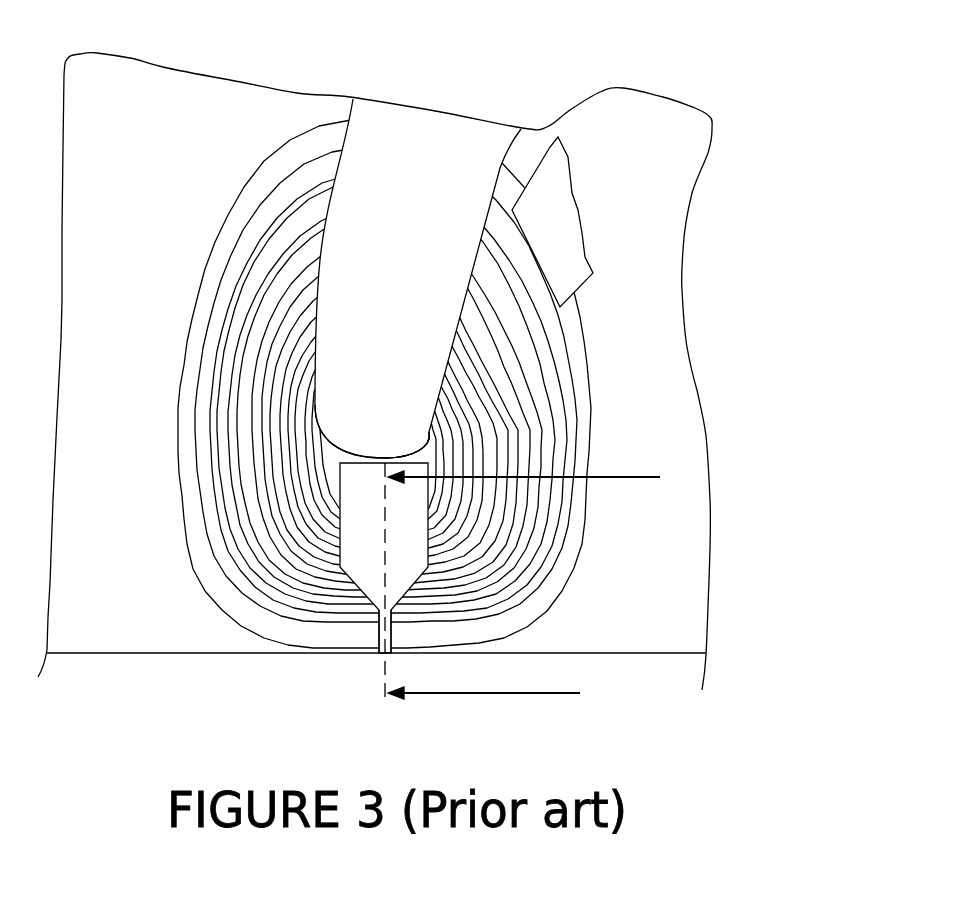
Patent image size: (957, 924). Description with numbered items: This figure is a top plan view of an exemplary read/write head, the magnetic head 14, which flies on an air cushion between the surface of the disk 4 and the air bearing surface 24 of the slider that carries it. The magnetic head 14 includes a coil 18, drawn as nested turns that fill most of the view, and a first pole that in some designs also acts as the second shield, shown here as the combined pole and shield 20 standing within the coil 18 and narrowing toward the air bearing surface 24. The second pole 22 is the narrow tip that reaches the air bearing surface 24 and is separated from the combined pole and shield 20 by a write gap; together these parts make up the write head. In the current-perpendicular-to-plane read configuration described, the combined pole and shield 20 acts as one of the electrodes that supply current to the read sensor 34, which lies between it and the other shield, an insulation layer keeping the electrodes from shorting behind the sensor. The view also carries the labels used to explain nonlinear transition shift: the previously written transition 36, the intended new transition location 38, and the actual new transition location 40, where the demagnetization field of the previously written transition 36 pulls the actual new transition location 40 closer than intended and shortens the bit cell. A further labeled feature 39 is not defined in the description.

The magnetic head 14 is at (158, 272).
The coil 18 is at (190, 502).
The P1/S2 pole/shield 20 is at (357, 500).
The second pole P2 22 is at (382, 660).
The air bearing surface (ABS) 24 is at (126, 660).
The read sensor 34 is at (358, 432).
The previously written transition 36 is at (569, 222).
The intended new transition location 38 is at (403, 432).
The trailing edge corner 39 is at (407, 445).
The actual new transition location 40 is at (405, 304).
The disk 4 is at (537, 594).